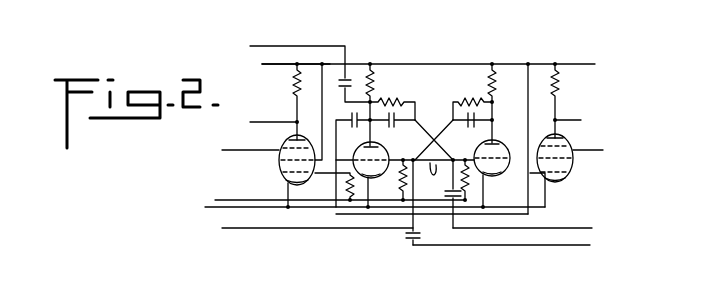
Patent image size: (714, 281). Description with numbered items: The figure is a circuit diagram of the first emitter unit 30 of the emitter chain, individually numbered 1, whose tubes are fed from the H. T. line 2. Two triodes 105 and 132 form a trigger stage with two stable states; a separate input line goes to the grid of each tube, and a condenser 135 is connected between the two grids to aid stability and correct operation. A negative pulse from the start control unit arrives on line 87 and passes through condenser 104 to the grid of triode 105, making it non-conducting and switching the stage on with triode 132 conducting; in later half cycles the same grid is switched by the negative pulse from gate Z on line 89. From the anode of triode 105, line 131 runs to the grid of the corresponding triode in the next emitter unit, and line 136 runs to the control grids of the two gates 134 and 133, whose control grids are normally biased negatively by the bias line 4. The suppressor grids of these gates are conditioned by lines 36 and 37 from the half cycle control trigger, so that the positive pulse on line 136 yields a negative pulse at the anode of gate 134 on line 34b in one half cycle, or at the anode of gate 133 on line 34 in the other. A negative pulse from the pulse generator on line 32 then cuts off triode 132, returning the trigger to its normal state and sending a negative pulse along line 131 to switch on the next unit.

The emitter unit number 1 is at (210, 207).
The H. T. line 2 is at (415, 64).
The bias line 4 is at (232, 199).
The emitter unit 30 is at (495, 60).
The line 32 is at (592, 228).
The line 34 is at (581, 120).
The line 34b is at (268, 122).
The line 36 is at (244, 150).
The line 37 is at (603, 150).
The line 87 is at (590, 245).
The line 89 is at (242, 229).
The condenser 104 is at (412, 235).
The triode 105 is at (362, 171).
The line 131 is at (256, 46).
The triode 132 is at (497, 166).
The gate 133 is at (573, 166).
The gate 134 is at (279, 158).
The condenser 135 is at (439, 194).
The line 136 is at (336, 214).